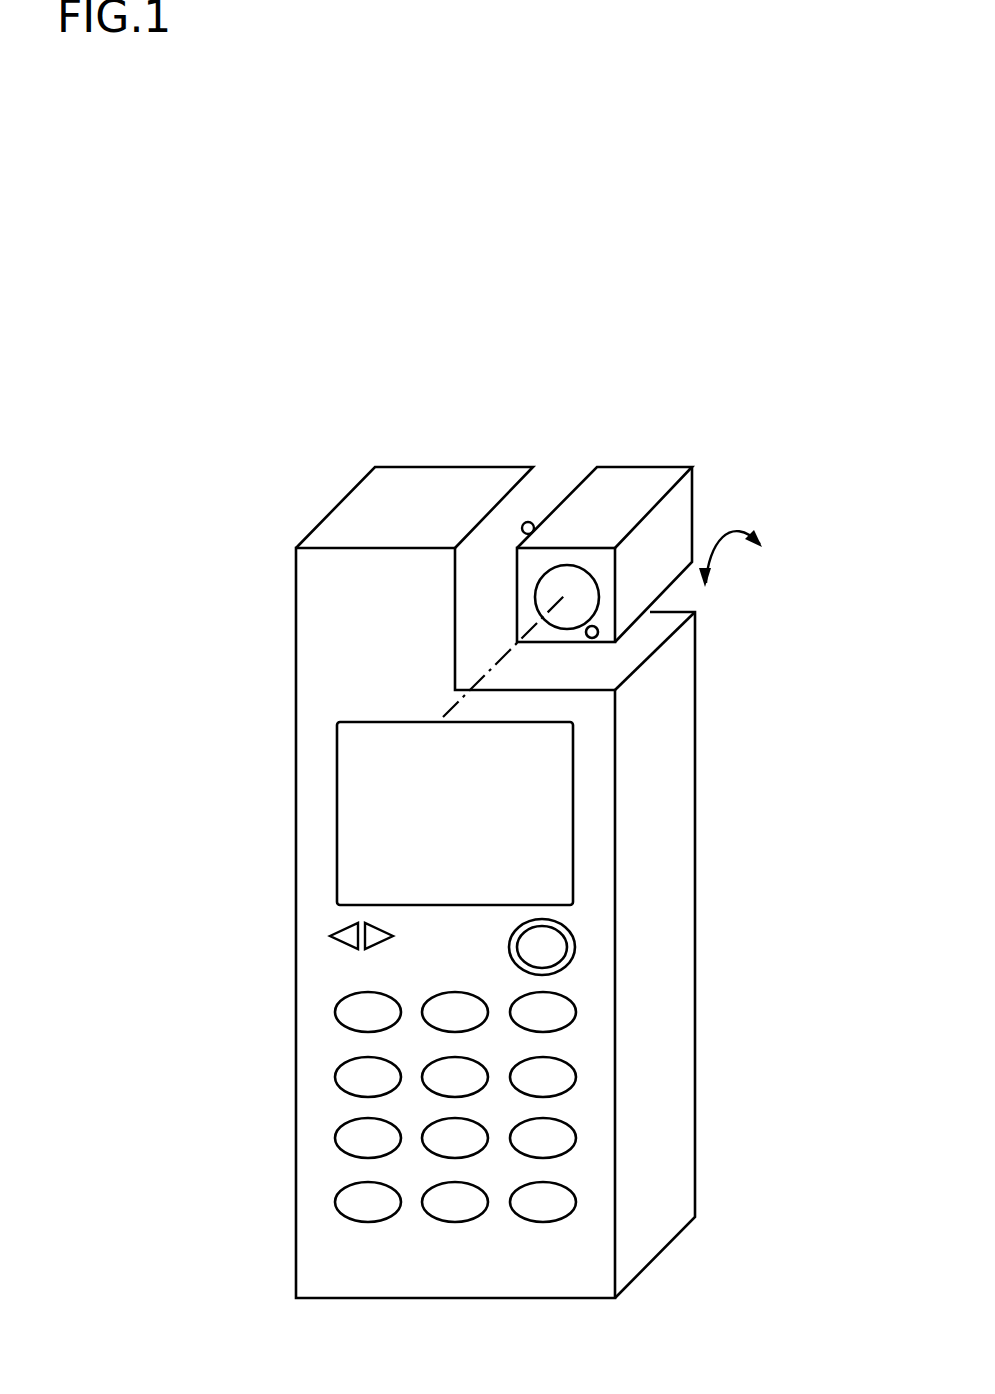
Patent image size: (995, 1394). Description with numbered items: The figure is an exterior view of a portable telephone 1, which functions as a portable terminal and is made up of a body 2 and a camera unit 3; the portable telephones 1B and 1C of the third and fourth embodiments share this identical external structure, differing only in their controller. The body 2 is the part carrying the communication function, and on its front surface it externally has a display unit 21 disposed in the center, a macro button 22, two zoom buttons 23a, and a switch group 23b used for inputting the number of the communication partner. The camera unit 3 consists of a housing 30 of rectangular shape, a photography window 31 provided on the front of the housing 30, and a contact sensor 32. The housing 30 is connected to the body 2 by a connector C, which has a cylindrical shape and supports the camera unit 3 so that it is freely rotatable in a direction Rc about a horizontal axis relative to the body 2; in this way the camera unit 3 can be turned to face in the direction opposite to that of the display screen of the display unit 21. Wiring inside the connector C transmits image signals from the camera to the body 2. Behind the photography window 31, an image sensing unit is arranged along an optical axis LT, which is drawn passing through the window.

The portable telephone 1 is at (222, 287).
The portable telephone 1B is at (484, 798).
The portable telephone 1C is at (484, 798).
The body 2 is at (443, 455).
The camera unit 3 is at (664, 458).
The housing 30 is at (606, 467).
The photography window 31 is at (600, 593).
The contact sensor 32 is at (597, 636).
The connector C is at (522, 522).
The direction Rc is at (735, 515).
The optical axis LT is at (450, 707).
The display unit 21 is at (573, 835).
The macro button 22 is at (574, 945).
The zoom buttons 23a is at (340, 953).
The switch group 23b is at (590, 1082).